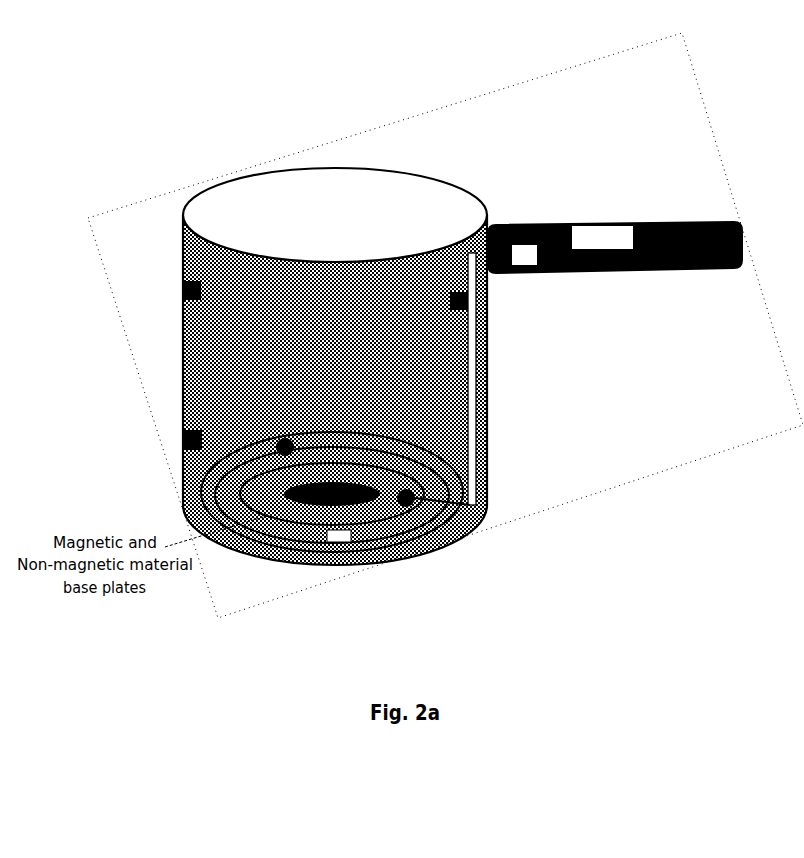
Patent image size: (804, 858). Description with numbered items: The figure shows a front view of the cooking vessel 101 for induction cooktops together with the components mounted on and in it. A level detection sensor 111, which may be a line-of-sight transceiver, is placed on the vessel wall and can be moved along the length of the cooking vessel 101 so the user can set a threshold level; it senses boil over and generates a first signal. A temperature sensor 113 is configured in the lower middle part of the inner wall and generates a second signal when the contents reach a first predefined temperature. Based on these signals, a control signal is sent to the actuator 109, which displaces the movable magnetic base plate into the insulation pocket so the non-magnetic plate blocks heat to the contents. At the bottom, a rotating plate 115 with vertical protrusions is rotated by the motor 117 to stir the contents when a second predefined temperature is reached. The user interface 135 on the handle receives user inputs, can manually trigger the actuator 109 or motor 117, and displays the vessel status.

The cooking vessel 101 is at (343, 203).
The actuator 109 is at (530, 253).
The level detection sensor 111 is at (450, 298).
The temperature sensor 113 is at (183, 435).
The rotating plate 115 is at (380, 462).
The motor 117 is at (352, 543).
The user interface 135 is at (597, 233).